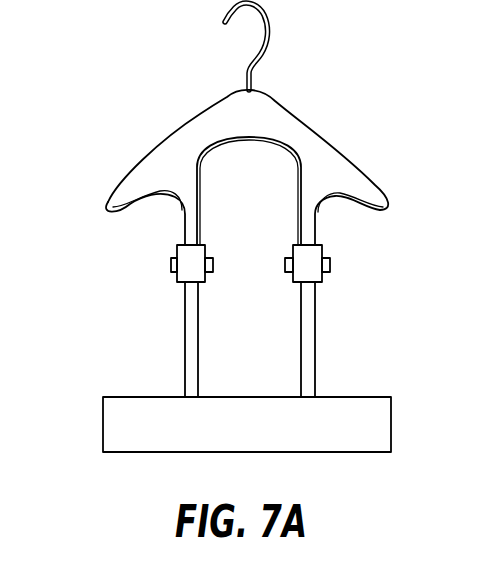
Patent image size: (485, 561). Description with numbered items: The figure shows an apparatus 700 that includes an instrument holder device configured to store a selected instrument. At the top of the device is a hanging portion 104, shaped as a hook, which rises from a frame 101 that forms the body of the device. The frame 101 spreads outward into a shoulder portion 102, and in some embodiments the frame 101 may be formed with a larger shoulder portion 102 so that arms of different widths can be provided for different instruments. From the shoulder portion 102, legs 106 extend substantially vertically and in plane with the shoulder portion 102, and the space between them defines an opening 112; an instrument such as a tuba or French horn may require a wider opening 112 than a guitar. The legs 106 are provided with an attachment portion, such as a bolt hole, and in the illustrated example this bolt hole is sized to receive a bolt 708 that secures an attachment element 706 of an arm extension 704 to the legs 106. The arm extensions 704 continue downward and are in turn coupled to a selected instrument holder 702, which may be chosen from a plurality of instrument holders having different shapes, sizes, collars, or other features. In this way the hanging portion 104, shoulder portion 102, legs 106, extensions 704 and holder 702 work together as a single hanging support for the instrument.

The apparatus 700 is at (100, 34).
The frame 101 is at (263, 120).
The shoulder portion 102 is at (125, 172).
The hanging portion 104 is at (268, 50).
The legs 106 is at (317, 226).
The opening 112 is at (205, 228).
The selected instrument holder 702 is at (261, 403).
The arm extension 704 is at (316, 328).
The attachment element 706 is at (322, 277).
The bolt 708 is at (329, 260).